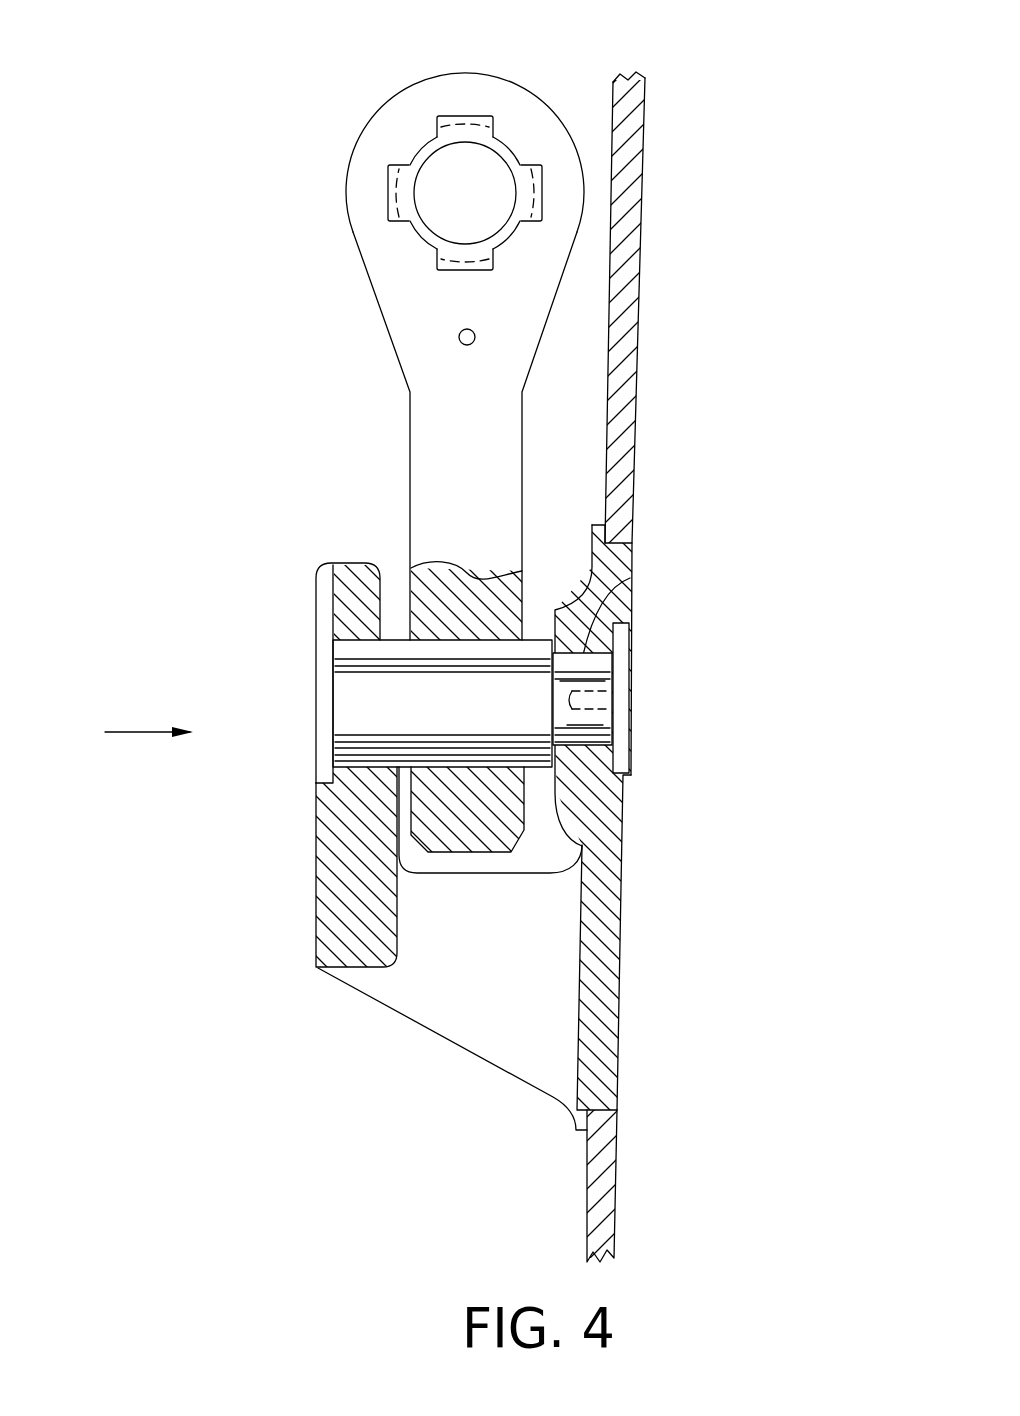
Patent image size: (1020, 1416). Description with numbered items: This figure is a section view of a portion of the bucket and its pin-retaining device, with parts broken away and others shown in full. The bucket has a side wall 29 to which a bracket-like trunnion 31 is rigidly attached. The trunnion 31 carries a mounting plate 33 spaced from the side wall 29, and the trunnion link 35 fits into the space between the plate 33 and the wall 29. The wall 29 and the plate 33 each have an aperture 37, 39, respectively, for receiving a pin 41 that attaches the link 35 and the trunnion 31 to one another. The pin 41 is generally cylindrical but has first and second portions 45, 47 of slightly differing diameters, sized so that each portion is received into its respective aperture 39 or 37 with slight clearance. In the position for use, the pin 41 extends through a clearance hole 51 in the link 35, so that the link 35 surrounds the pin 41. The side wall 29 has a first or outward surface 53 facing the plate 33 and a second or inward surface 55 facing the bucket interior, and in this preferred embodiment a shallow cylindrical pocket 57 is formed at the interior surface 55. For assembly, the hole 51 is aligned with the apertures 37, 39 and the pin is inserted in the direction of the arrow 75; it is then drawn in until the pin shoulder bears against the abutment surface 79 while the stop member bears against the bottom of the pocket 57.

The side wall 29 is at (635, 163).
The trunnion 31 is at (383, 988).
The mounting plate 33 is at (338, 830).
The trunnion link 35 is at (432, 400).
The aperture 37 is at (597, 603).
The aperture 39 is at (318, 590).
The pin 41 is at (342, 686).
The first portion 45 is at (562, 672).
The second portion 47 is at (397, 645).
The clearance hole 51 is at (482, 630).
The outward surface 53 is at (613, 107).
The inward surface 55 is at (623, 941).
The cylindrical pocket 57 is at (622, 773).
The arrow 75 is at (157, 732).
The abutment surface 79 is at (555, 780).